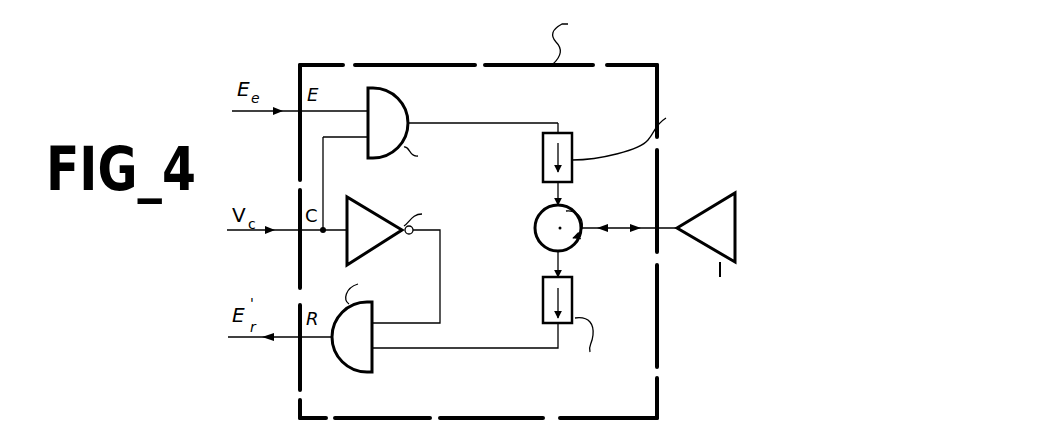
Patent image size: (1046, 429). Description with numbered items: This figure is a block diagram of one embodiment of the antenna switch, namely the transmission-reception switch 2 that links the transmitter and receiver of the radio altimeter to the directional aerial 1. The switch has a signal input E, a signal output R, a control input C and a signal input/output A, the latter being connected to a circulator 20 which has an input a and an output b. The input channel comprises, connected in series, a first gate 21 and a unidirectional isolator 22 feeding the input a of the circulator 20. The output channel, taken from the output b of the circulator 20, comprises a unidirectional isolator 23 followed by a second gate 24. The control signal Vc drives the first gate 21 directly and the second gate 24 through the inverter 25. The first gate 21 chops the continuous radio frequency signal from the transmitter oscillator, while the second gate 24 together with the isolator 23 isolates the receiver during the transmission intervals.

The directional aerial 1 is at (703, 212).
The transmission-reception switch 2 is at (512, 64).
The circulator 20 is at (536, 222).
The first gate 21 is at (397, 94).
The unidirectional isolator 22 is at (574, 157).
The unidirectional isolator 23 is at (575, 311).
The second gate 24 is at (362, 372).
The inverter 25 is at (365, 205).